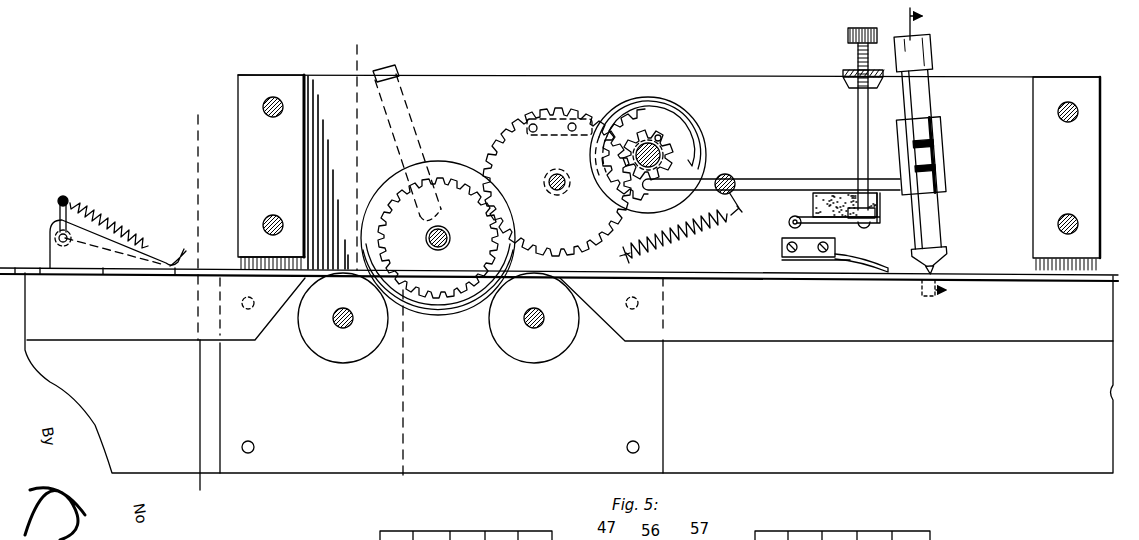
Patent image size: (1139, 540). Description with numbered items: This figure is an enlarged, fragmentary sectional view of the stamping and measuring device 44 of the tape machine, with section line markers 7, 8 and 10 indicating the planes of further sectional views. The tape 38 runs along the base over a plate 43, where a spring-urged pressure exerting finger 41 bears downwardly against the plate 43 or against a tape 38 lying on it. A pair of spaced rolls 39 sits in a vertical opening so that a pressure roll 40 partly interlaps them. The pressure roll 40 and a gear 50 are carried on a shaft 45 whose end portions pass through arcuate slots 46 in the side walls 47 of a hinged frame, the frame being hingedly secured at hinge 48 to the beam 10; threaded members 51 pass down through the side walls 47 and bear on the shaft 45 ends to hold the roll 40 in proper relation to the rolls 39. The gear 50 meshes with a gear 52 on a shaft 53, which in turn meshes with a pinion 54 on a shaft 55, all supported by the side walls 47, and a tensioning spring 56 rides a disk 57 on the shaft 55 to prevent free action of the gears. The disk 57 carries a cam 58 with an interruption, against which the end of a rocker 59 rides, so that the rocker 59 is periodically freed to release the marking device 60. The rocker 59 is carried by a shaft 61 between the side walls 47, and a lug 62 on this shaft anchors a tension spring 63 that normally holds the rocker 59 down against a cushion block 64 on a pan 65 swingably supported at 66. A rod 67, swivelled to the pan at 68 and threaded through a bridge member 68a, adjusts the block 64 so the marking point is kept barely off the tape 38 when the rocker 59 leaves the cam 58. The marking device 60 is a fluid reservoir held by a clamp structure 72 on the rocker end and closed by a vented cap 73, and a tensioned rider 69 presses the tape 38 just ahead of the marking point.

The section line 7- 7 is at (196, 126).
The section line 8- 8 is at (356, 47).
The beam 10 is at (938, 156).
The tape 38 is at (16, 267).
The rolls 39 is at (357, 351).
The pressure roll 40 is at (438, 203).
The pressure exerting finger 41 is at (149, 248).
The plate 43 is at (102, 274).
The stamping and measuring device 44 is at (748, 85).
The shaft 45 is at (438, 250).
The arcuate slots 46 is at (468, 176).
The side walls 47 is at (602, 87).
The hinge 48 is at (449, 533).
The gear 50 is at (452, 303).
The threaded members 51 is at (396, 105).
The gear 52 is at (557, 148).
The shaft 53 is at (560, 191).
The pinion 54 is at (663, 132).
The shaft 55 is at (661, 152).
The tensioning spring 56 is at (650, 97).
The disk 57 is at (707, 154).
The cam 58 is at (660, 136).
The rocker 59 is at (796, 187).
The marking device 60 is at (945, 153).
The shaft 61 is at (717, 197).
The lug 62 is at (739, 210).
The tension spring 63 is at (690, 238).
The cushion block 64 is at (833, 193).
The pan 65 is at (881, 225).
The swing support 66 is at (793, 218).
The rod 67 is at (862, 116).
The swivel connection 68 is at (855, 221).
The bridge member 68a is at (845, 72).
The tensioned rider 69 is at (845, 268).
The clamp structure 72 is at (943, 176).
The vented cap 73 is at (935, 53).